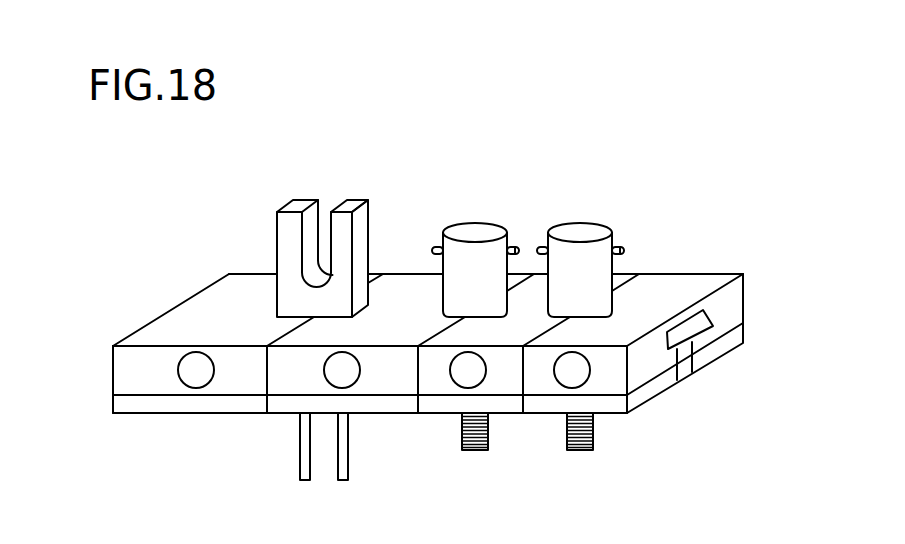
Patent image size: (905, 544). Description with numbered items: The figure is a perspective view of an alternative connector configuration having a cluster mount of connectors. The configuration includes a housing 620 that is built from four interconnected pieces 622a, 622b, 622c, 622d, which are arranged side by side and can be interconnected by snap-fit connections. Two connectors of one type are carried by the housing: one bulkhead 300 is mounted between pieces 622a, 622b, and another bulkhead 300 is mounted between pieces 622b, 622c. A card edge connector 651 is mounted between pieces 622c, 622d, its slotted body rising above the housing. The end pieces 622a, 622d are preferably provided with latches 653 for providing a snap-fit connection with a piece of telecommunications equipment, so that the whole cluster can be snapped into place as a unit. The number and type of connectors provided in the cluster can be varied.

The housing 620 is at (743, 274).
The card edge connector 651 is at (363, 199).
The bulkhead 300 is at (585, 225).
The latch 653 is at (695, 343).
The piece 622a is at (620, 415).
The piece 622b is at (507, 415).
The piece 622c is at (377, 415).
The piece 622d is at (207, 415).